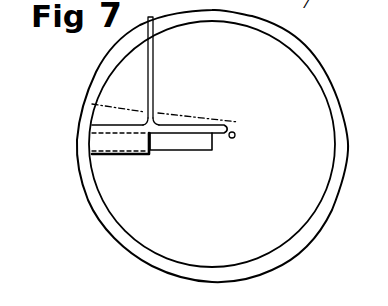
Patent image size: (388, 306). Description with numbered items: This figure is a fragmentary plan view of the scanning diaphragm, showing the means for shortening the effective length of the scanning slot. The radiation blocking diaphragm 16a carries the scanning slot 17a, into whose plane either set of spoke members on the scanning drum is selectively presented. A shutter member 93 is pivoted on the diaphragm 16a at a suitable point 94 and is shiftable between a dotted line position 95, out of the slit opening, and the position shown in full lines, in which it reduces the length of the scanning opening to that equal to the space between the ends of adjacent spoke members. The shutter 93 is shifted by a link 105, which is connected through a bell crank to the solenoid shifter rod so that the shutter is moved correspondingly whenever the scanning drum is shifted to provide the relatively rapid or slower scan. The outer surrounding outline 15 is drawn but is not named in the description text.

The outer wall of housing 15 is at (320, 225).
The radiation blocking diaphragm 16a is at (305, 210).
The link 105 is at (155, 75).
The dotted line position 95 is at (116, 108).
The pivot point 94 is at (238, 133).
The scanning slot 17a is at (190, 145).
The shutter member 93 is at (126, 143).